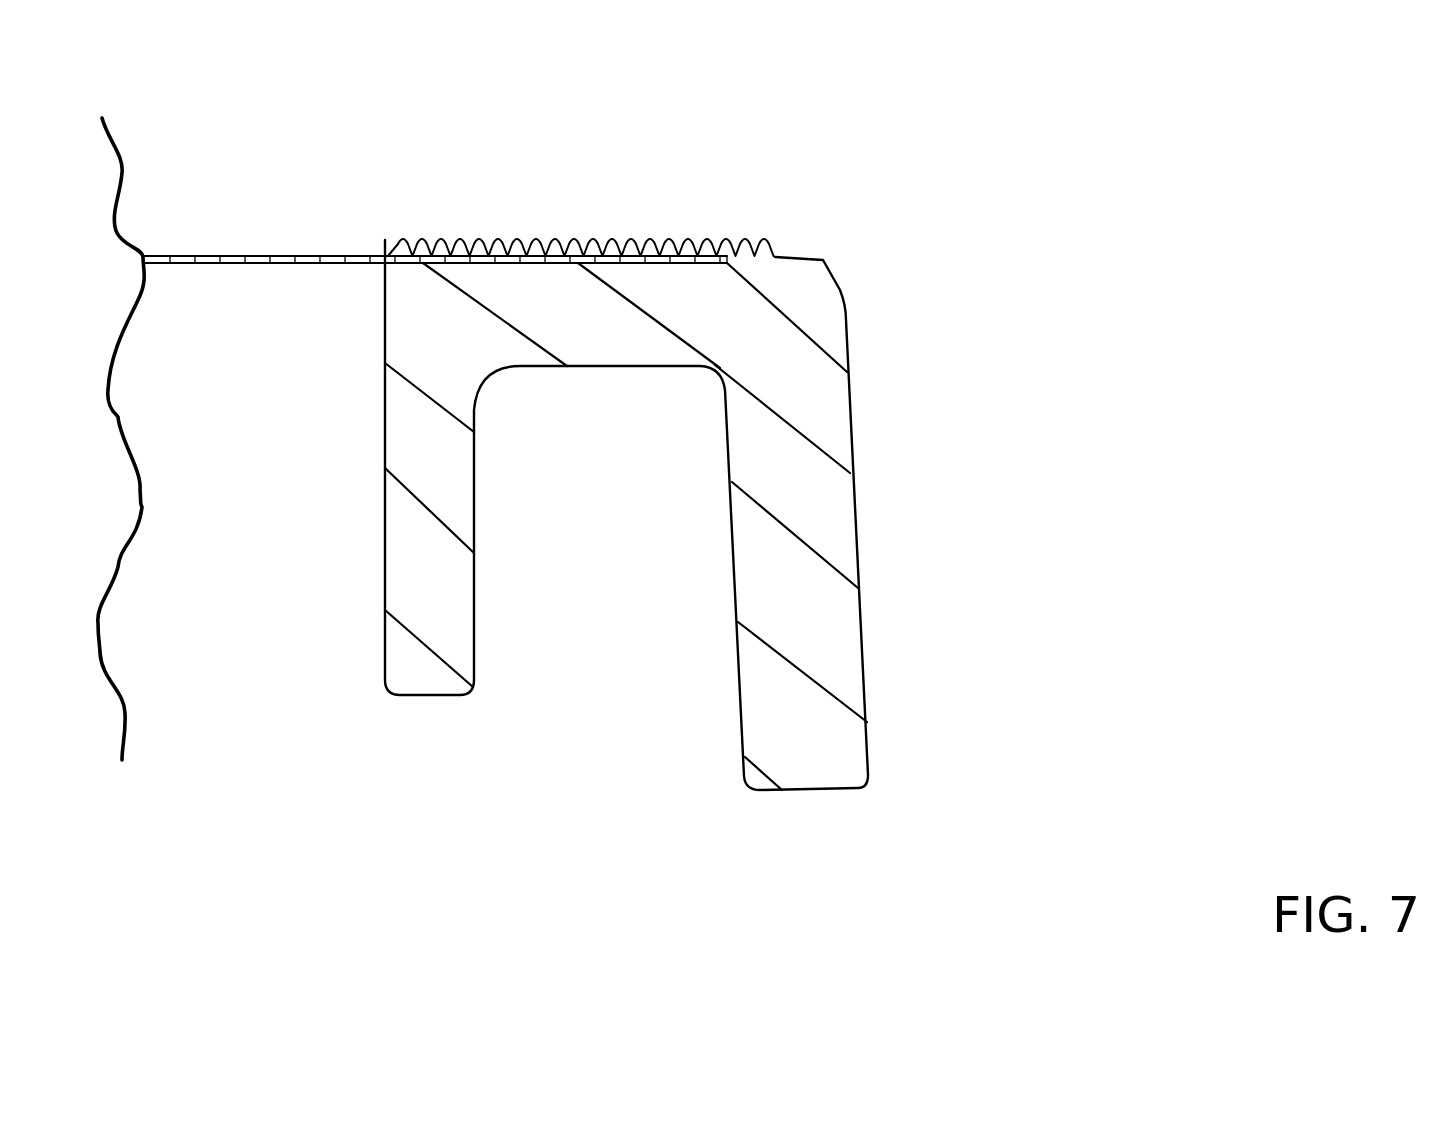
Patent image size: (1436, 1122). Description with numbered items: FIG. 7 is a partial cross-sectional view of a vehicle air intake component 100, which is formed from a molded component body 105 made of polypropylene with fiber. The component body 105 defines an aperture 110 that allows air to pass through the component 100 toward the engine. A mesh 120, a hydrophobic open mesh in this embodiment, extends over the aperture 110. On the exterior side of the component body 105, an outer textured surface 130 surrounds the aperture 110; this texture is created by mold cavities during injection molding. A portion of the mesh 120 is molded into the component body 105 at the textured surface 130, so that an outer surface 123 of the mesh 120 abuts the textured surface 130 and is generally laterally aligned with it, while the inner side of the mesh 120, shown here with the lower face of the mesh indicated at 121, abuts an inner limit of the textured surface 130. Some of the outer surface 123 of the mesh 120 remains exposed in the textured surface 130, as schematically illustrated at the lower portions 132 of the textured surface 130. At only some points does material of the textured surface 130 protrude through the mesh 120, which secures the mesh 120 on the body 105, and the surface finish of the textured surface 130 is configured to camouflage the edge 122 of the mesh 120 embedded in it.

The component 100 is at (704, 400).
The component body 105 is at (869, 696).
The aperture 110 is at (225, 330).
The mesh 120 is at (435, 214).
The lower surface of layer 121 is at (303, 268).
The edge of the mesh 122 is at (702, 237).
The outer surface of the mesh 123 is at (186, 251).
The outer textured surface 130 is at (697, 410).
The lower portions of the textured surface 132 is at (581, 153).